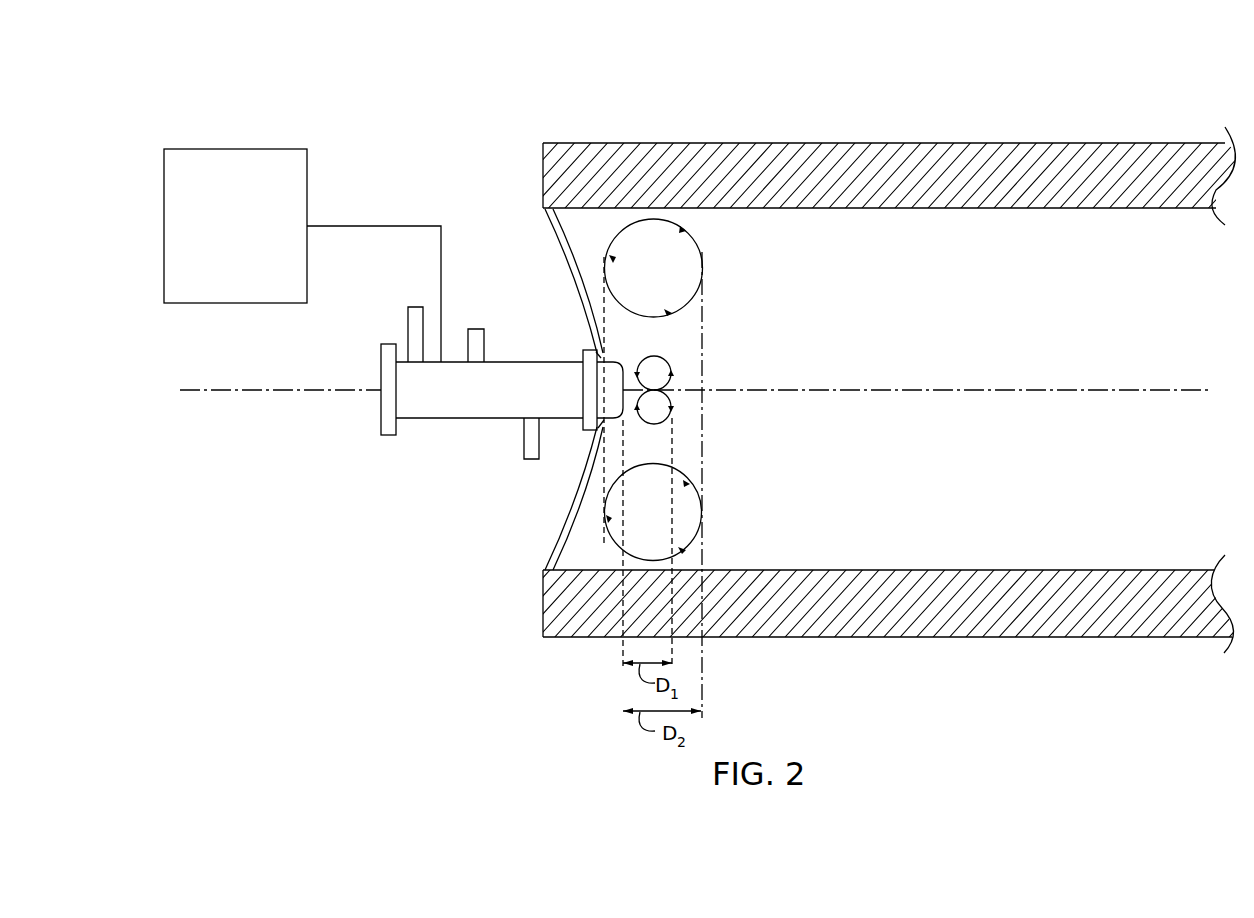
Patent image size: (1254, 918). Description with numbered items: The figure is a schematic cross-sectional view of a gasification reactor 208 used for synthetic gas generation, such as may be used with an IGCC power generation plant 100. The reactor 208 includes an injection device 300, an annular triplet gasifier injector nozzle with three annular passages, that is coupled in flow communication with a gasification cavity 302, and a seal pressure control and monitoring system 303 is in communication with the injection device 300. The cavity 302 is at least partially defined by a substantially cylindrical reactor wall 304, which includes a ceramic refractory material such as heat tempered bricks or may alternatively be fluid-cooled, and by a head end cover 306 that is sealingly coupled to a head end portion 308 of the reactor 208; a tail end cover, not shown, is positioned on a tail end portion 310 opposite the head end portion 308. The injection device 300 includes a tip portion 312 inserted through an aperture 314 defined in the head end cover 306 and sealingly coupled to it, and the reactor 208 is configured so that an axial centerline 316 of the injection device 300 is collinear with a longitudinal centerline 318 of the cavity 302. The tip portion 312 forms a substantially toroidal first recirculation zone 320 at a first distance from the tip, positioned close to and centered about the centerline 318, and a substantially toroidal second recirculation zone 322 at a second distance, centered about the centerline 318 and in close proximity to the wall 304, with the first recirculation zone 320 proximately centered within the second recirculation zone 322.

The IGCC power generation plant 100 is at (451, 33).
The gasification reactor 208 is at (451, 96).
The injection device 300 is at (475, 420).
The gasification cavity 302 is at (936, 308).
The seal pressure control and monitoring system 303 is at (220, 294).
The reactor wall 304 is at (945, 142).
The head end cover 306 is at (583, 302).
The head end portion 308 is at (470, 158).
The tail end portion 310 is at (1158, 296).
The tip portion 312 is at (606, 420).
The aperture 314 is at (603, 356).
The axial centerline 316 is at (280, 393).
The longitudinal centerline 318 is at (946, 393).
The first recirculation zone 320 is at (683, 376).
The second recirculation zone 322 is at (680, 270).